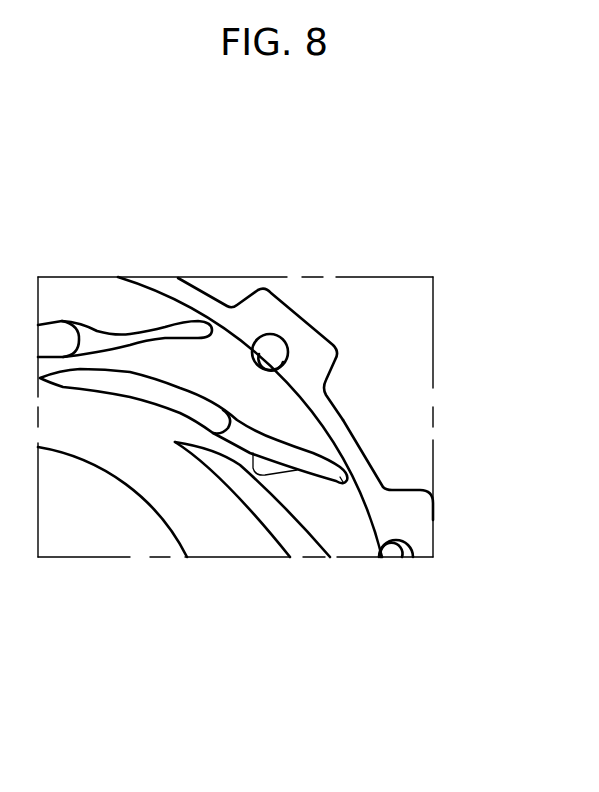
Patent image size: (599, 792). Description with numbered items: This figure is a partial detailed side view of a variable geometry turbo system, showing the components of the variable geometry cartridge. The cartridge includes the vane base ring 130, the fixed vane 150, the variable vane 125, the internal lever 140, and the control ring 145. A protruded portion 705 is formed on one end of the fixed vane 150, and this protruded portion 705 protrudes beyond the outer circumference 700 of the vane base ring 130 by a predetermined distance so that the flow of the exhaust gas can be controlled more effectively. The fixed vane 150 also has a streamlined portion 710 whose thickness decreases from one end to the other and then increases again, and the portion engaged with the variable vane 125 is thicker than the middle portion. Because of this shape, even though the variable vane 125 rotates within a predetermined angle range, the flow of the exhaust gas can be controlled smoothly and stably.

The variable vane 125 is at (140, 390).
The vane base ring 130 is at (223, 520).
The internal lever 140 is at (268, 352).
The control ring 145 is at (313, 347).
The fixed vane 150 is at (339, 458).
The outer circumference 700 is at (350, 478).
The protruded portion 705 is at (340, 477).
The streamlined portion 710 is at (262, 467).